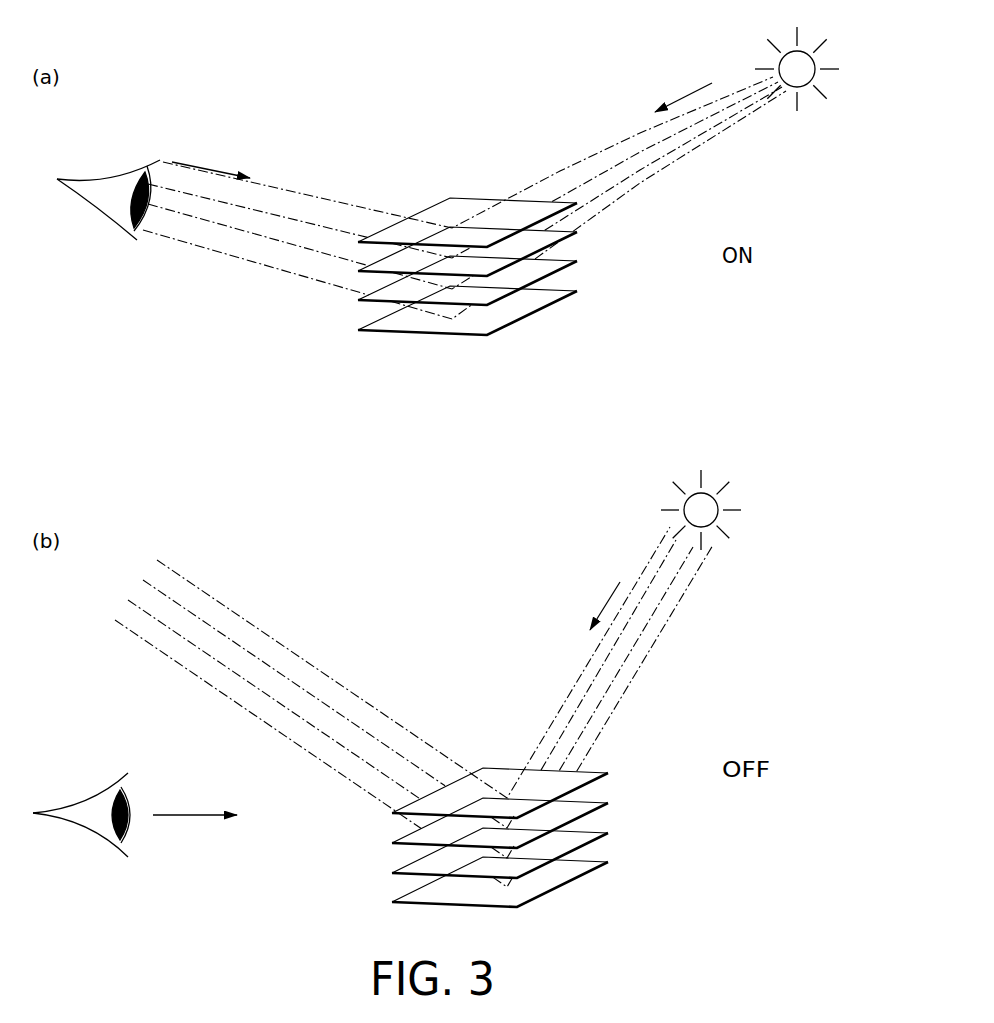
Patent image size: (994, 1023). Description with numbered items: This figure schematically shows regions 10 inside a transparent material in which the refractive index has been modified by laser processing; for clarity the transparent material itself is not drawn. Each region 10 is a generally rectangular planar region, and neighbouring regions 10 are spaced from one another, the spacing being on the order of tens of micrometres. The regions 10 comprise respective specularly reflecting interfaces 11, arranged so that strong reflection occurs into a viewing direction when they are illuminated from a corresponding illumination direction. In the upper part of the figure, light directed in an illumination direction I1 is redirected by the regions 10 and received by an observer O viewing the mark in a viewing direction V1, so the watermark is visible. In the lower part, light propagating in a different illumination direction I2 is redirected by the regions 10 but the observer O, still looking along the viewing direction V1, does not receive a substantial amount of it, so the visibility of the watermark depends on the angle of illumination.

The regions 10 is at (556, 215).
The specularly reflecting interfaces 11 is at (458, 204).
The observer O is at (97, 125).
The viewing direction V1 is at (201, 477).
The illumination direction I1 is at (683, 86).
The illumination direction I2 is at (603, 600).